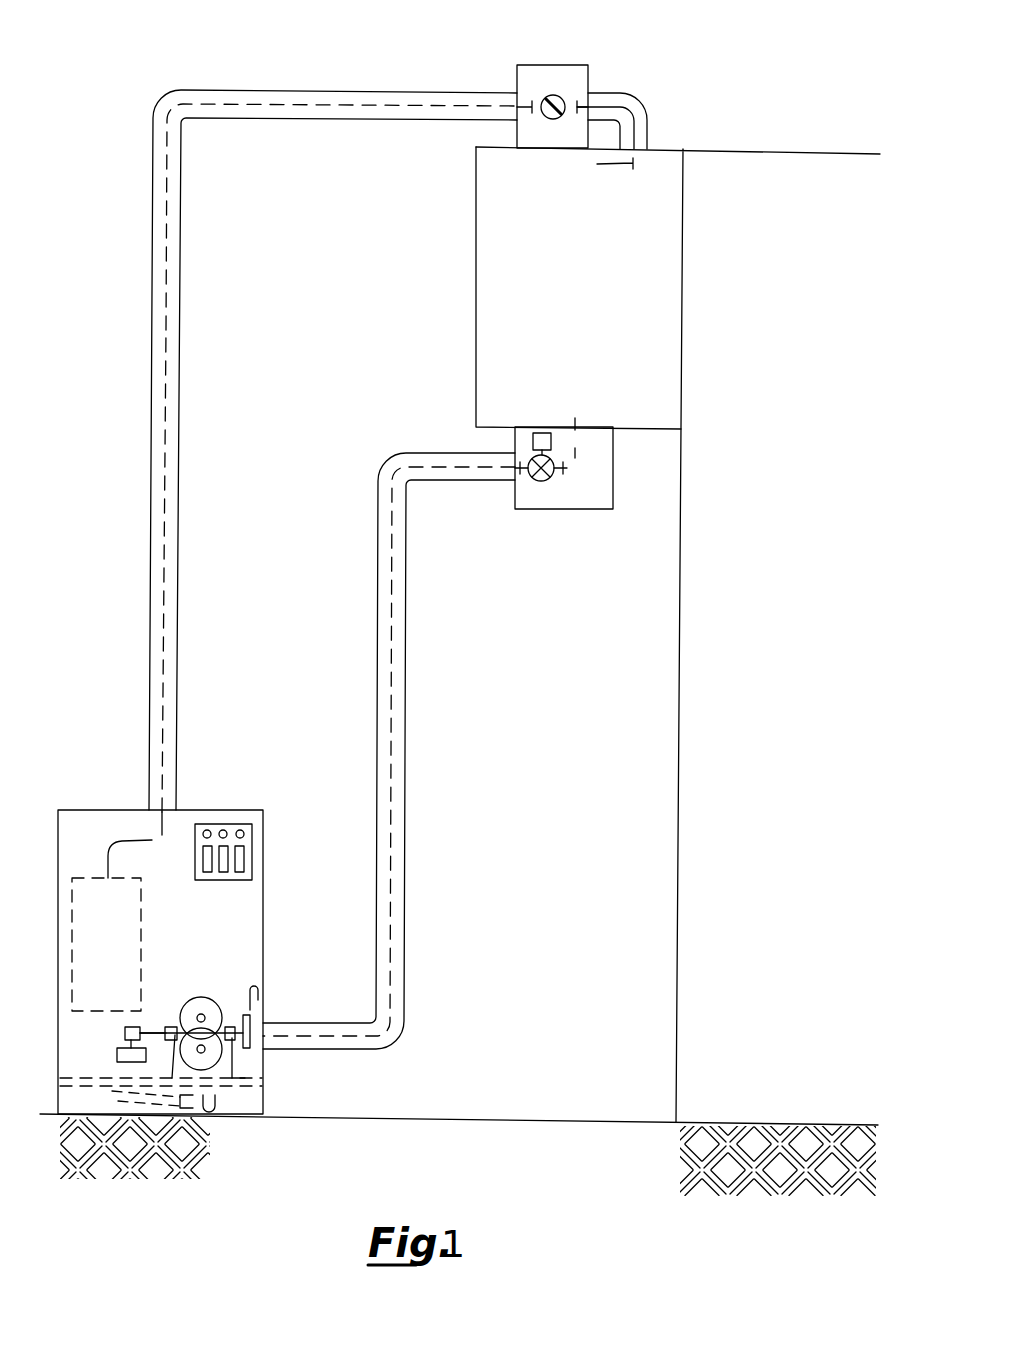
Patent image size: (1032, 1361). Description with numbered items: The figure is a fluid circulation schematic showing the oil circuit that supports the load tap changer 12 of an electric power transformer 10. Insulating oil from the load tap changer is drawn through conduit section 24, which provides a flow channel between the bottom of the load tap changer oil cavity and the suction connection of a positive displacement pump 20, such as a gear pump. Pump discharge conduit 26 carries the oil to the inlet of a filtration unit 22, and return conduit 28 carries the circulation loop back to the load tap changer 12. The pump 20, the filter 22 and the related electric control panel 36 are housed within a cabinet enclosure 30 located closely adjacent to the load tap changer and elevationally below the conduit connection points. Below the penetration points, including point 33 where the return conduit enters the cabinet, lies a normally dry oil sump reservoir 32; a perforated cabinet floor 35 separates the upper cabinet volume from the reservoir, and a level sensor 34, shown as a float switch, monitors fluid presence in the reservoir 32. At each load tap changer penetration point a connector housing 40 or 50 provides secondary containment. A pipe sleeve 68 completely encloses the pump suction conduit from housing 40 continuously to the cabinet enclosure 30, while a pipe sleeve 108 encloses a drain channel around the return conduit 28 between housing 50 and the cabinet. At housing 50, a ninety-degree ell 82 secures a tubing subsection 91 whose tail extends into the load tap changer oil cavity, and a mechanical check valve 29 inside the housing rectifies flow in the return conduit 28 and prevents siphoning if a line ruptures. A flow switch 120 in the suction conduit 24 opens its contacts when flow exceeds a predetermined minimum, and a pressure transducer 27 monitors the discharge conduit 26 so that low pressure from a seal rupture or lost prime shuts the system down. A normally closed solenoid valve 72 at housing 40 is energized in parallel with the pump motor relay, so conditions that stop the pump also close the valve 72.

The electric power transformer 10 is at (802, 569).
The load tap changer 12 is at (590, 335).
The positive displacement pump 20 is at (182, 1013).
The filtration unit 22 is at (124, 911).
The conduit section 24 is at (393, 667).
The pump discharge conduit 26 is at (155, 1027).
The pressure transducer 27 is at (118, 1048).
The return conduit 28 is at (168, 343).
The mechanical check valve 29 is at (559, 96).
The cabinet enclosure 30 is at (265, 880).
The oil sump reservoir 32 is at (265, 1100).
The conduit penetration point 33 is at (158, 817).
The level sensor 34 is at (212, 1113).
The perforated cabinet floor 35 is at (110, 1078).
The electric control panel 36 is at (232, 824).
The connector housing 40 is at (560, 510).
The connector housing 50 is at (550, 65).
The pipe sleeve 68 is at (407, 592).
The normally closed solenoid valve 72 is at (552, 441).
The 90° ell 82 is at (643, 108).
The tubing subsection 91 is at (600, 162).
The pipe sleeve 108 is at (183, 270).
The flow switch 120 is at (240, 1014).